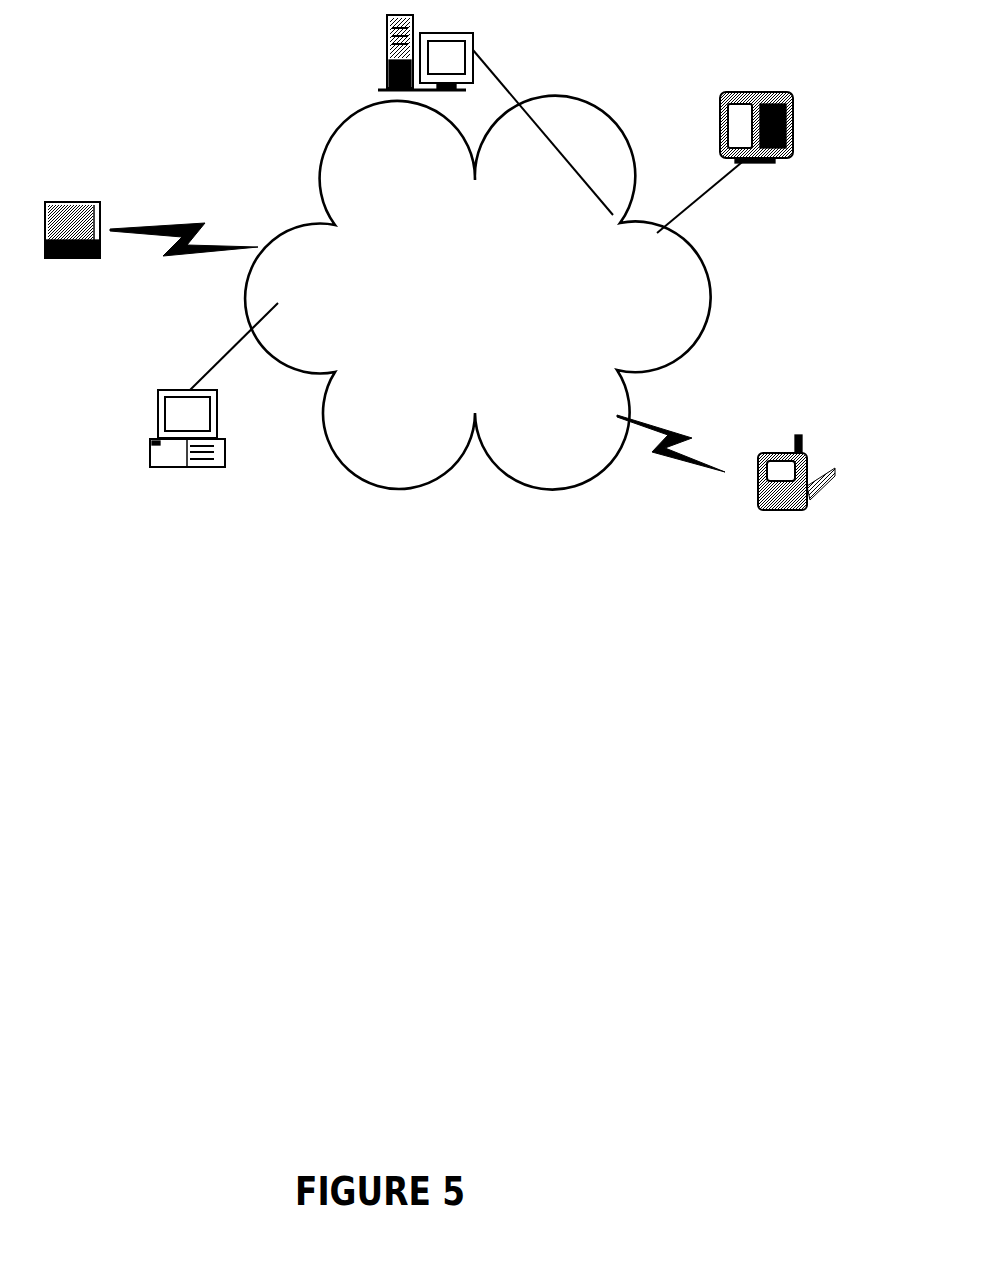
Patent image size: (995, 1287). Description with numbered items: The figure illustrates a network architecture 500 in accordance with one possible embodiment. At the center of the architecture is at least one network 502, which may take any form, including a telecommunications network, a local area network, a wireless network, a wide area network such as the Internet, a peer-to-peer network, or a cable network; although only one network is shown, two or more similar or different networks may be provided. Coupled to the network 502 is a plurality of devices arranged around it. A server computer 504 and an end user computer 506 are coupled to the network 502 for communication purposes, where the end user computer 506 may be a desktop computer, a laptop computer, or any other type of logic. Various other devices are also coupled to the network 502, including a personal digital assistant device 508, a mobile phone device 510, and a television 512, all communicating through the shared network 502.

The network architecture 500 is at (383, 752).
The network 502 is at (535, 447).
The server computer 504 is at (387, 53).
The end user computer 506 is at (150, 447).
The personal digital assistant (PDA) device 508 is at (70, 202).
The mobile phone device 510 is at (757, 452).
The television 512 is at (737, 85).